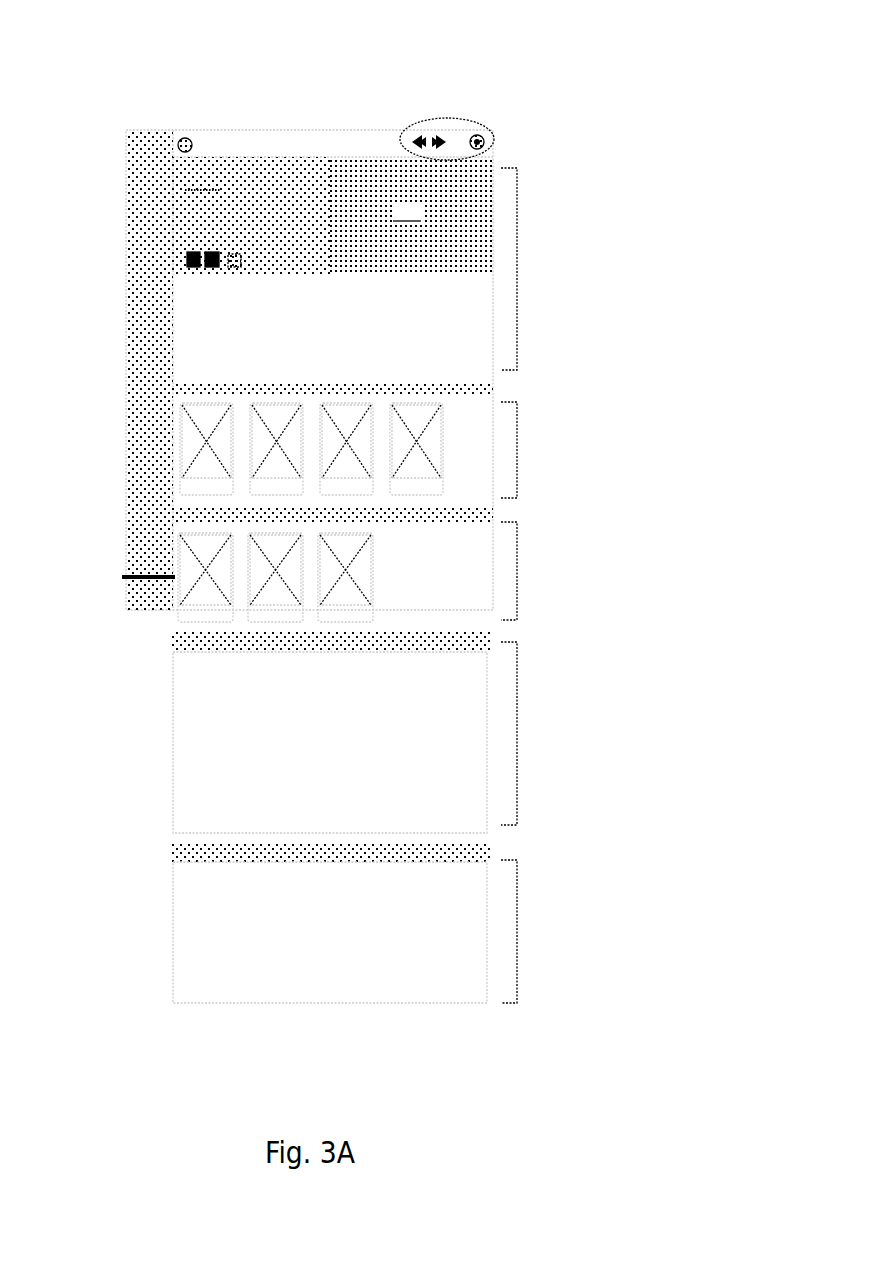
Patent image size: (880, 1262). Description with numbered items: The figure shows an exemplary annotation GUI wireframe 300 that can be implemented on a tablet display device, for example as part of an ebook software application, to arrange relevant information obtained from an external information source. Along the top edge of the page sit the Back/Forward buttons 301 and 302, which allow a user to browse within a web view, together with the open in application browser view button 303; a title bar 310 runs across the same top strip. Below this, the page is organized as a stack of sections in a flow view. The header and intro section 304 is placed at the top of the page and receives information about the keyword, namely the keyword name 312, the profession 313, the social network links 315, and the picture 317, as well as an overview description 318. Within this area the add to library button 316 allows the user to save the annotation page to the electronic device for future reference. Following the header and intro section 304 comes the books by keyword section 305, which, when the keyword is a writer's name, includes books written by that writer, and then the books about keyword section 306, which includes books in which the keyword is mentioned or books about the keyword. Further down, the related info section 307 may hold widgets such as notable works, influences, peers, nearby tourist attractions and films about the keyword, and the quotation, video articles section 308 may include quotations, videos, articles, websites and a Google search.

The annotation GUI wireframe 300 is at (289, 26).
The back button 301 is at (455, 107).
The forward button 302 is at (483, 126).
The open in application browser view button 303 is at (501, 144).
The header and intro section 304 is at (575, 269).
The books by keyword section 305 is at (429, 440).
The books about keyword section 306 is at (441, 564).
The related info section 307 is at (399, 732).
The quotation, video articles section 308 is at (447, 922).
The web page name title bar 310 is at (253, 167).
The keyword name 312 is at (189, 208).
The profession 313 is at (176, 190).
The social network links 315 is at (180, 260).
The add to library button 316 is at (195, 213).
The picture 317 is at (393, 221).
The overview description 318 is at (180, 323).